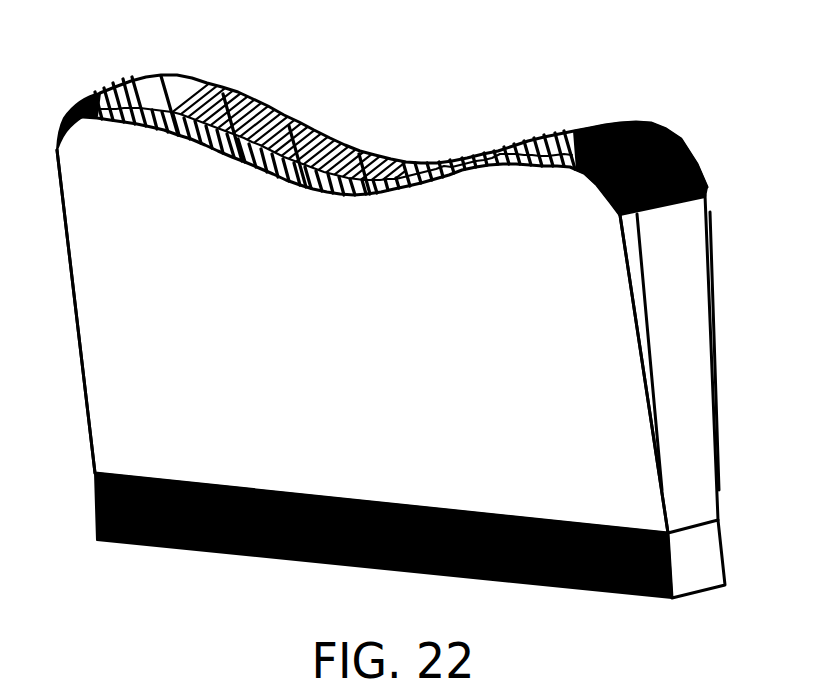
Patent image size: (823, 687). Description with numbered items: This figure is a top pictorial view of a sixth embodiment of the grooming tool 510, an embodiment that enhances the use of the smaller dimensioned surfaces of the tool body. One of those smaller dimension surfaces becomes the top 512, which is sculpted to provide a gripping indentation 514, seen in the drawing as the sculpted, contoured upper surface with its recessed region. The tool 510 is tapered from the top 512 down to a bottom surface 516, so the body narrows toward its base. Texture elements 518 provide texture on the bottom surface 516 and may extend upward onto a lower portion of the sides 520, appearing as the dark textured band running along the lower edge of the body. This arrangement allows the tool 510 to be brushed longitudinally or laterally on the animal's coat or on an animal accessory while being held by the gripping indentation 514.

The tool 510 is at (418, 90).
The top 512 is at (250, 130).
The gripping indentation 514 is at (370, 155).
The bottom surface 516 is at (707, 588).
The texture elements 518 is at (486, 577).
The sides 520 is at (163, 445).